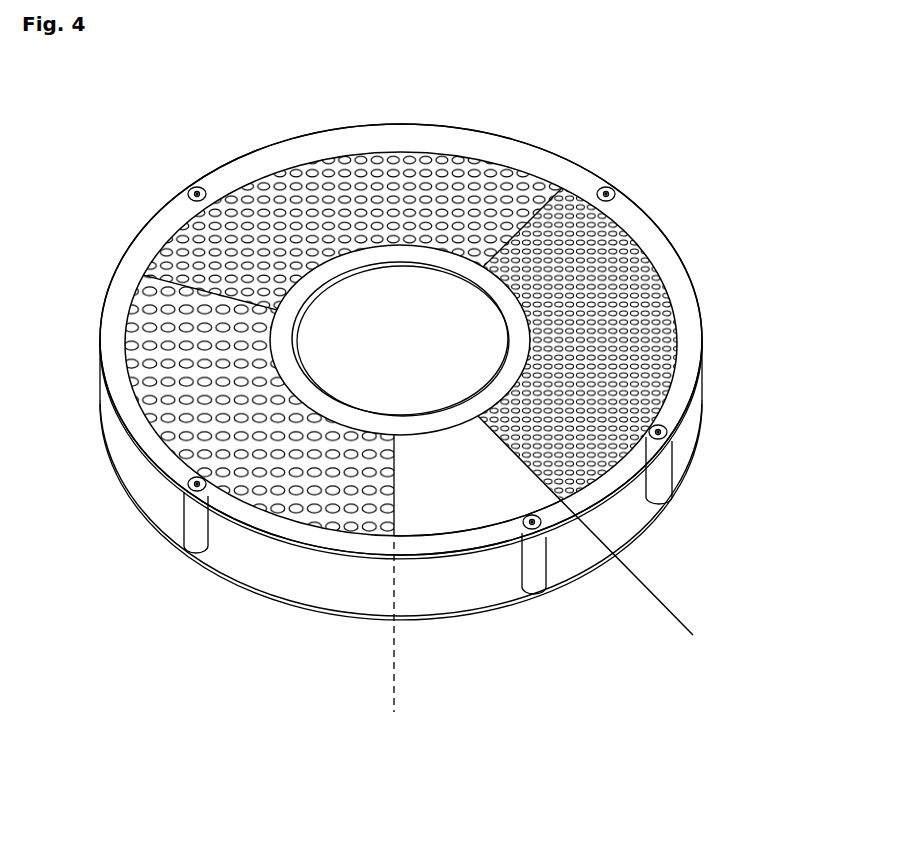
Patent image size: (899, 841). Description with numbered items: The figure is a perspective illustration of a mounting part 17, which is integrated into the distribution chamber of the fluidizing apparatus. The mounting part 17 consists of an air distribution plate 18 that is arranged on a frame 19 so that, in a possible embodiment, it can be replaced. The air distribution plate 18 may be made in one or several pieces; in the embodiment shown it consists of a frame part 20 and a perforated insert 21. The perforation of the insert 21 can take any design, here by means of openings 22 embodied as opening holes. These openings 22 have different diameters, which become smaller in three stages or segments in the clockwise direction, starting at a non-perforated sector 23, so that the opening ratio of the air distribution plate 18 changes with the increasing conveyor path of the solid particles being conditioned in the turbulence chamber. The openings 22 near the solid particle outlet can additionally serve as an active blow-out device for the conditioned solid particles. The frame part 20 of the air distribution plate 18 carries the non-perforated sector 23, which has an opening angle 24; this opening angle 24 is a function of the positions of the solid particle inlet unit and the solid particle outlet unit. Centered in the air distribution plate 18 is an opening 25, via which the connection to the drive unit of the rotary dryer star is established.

The mounting part 17 is at (25, 93).
The air distribution plate 18 is at (562, 155).
The frame 19 is at (663, 600).
The frame part 20 is at (163, 223).
The perforated insert 21 is at (618, 394).
The openings 22 is at (377, 157).
The non-perforated sector 23 is at (455, 487).
The opening angle 24 is at (394, 667).
The opening 25 is at (378, 328).